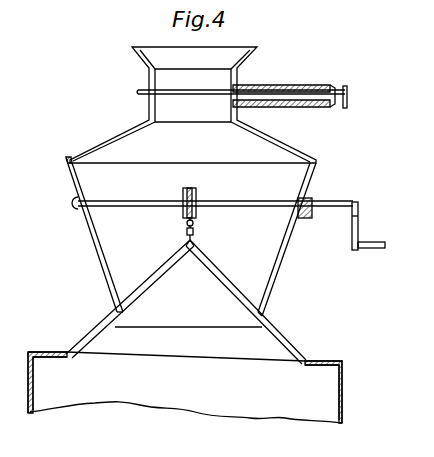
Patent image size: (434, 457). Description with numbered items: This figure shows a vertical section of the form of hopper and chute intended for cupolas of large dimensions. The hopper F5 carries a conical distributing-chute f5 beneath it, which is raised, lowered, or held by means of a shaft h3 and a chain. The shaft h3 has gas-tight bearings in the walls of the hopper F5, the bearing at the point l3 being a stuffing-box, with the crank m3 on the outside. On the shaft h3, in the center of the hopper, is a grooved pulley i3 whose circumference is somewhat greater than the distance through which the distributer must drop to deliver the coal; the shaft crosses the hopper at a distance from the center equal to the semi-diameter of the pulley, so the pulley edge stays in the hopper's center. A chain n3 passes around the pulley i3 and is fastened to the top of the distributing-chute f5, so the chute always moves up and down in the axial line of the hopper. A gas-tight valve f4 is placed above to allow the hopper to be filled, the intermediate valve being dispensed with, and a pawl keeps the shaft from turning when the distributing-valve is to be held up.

The gas-tight valve f4 is at (291, 85).
The hopper F5 is at (191, 181).
The shaft h3 is at (244, 206).
The grooved pulley i3 is at (183, 211).
The chain n3 is at (203, 223).
The stuffing-box l3 is at (316, 200).
The crank m3 is at (368, 237).
The conical distributing-chute f5 is at (211, 271).